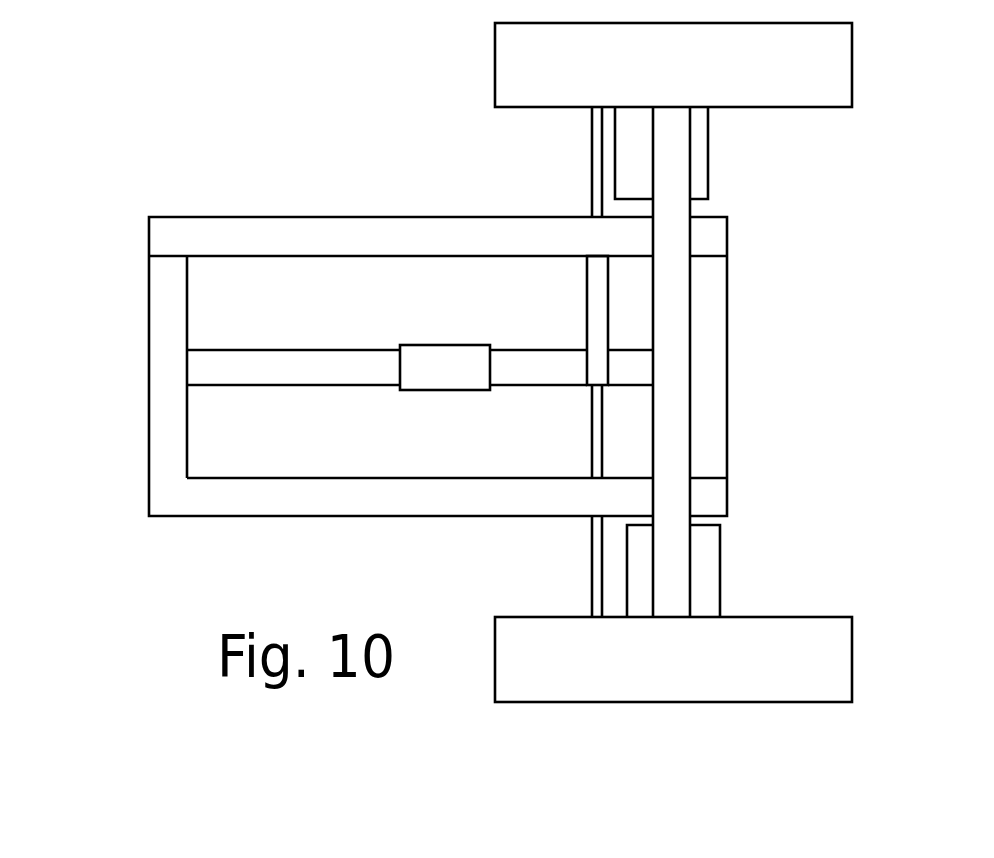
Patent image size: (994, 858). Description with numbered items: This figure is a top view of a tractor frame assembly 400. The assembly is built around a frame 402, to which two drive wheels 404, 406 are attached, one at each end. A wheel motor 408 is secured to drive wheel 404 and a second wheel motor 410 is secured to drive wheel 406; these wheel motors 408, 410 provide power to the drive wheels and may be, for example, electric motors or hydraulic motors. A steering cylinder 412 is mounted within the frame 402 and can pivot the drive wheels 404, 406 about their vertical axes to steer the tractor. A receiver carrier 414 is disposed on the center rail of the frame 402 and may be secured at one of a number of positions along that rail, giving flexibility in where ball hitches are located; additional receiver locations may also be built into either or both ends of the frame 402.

The tractor frame assembly 400 is at (168, 159).
The frame 402 is at (238, 217).
The drive wheel 404 is at (528, 107).
The drive wheel 406 is at (820, 617).
The wheel motor 408 is at (708, 152).
The wheel motor 410 is at (720, 542).
The steering cylinder 412 is at (587, 300).
The receiver carrier 414 is at (447, 390).